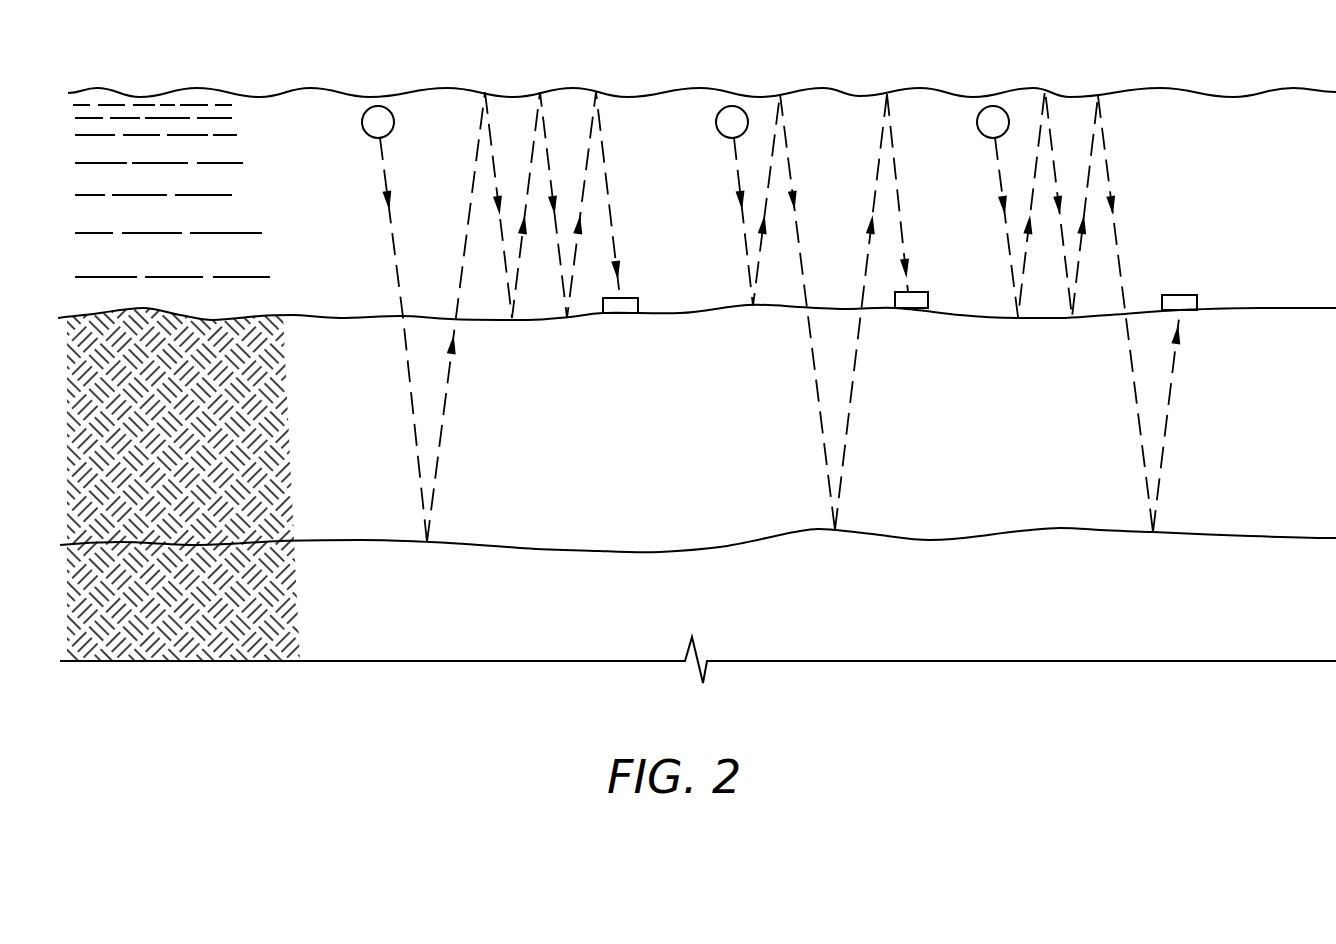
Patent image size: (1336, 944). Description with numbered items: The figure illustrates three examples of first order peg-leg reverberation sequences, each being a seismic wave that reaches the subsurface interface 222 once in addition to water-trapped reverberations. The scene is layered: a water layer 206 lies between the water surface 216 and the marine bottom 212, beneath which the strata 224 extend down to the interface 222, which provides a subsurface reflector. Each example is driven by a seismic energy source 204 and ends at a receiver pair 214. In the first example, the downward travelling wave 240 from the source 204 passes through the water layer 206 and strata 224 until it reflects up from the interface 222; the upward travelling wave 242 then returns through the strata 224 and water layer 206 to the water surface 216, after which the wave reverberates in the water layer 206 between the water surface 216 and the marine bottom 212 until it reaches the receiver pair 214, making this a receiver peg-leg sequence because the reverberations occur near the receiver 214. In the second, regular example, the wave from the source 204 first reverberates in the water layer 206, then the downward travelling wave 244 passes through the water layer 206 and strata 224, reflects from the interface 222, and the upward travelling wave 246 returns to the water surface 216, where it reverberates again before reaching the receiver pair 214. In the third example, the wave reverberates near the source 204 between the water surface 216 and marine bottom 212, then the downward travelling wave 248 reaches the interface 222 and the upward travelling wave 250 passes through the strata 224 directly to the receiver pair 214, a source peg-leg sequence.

The seismic energy source 204 is at (362, 121).
The water layer 206 is at (1295, 161).
The marine bottom 212 is at (1264, 312).
The receiver pair 214 is at (633, 297).
The water surface 216 is at (1166, 88).
The subsurface interface 222 is at (1268, 533).
The strata 224 is at (1299, 380).
The downward travelling wave 240 is at (409, 388).
The upward travelling wave 242 is at (447, 420).
The downward travelling wave 244 is at (818, 410).
The upward travelling wave 246 is at (850, 415).
The downward travelling wave 248 is at (1138, 423).
The upward travelling wave 250 is at (1170, 423).